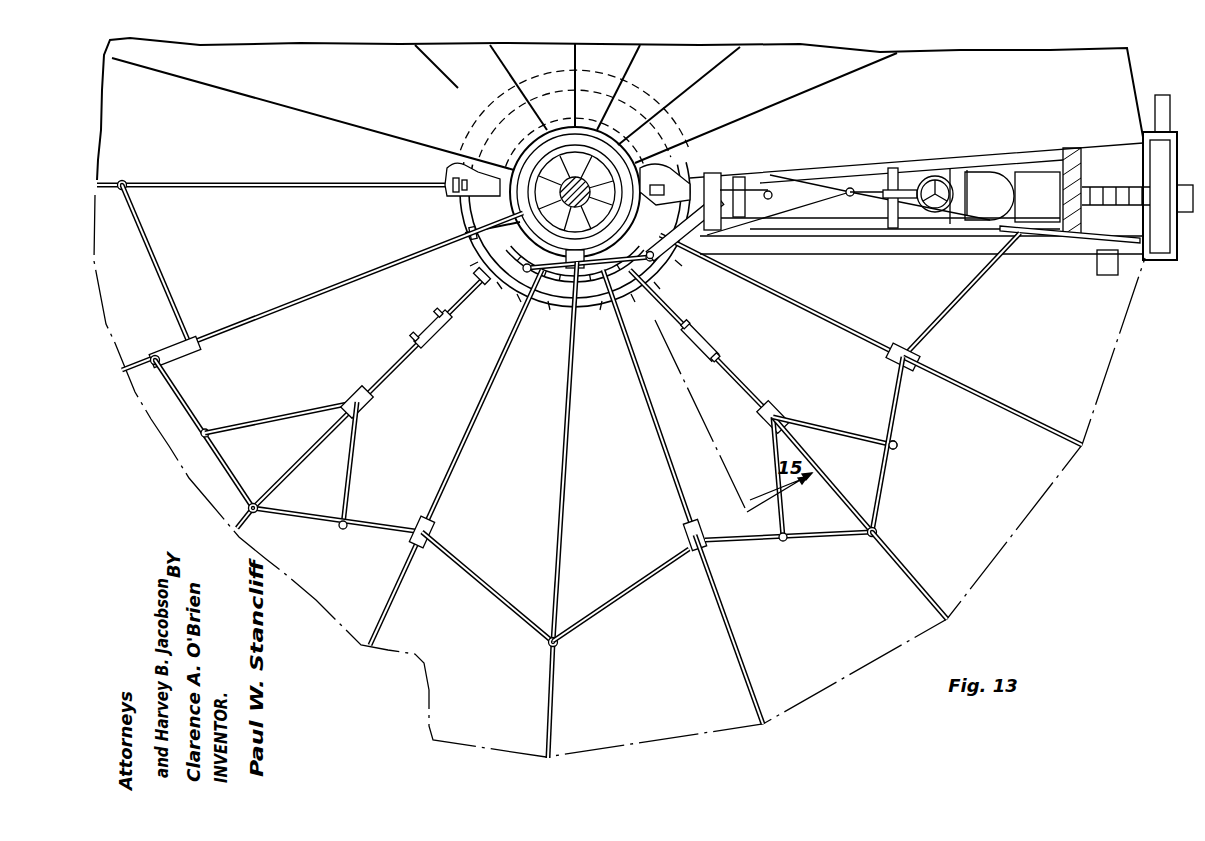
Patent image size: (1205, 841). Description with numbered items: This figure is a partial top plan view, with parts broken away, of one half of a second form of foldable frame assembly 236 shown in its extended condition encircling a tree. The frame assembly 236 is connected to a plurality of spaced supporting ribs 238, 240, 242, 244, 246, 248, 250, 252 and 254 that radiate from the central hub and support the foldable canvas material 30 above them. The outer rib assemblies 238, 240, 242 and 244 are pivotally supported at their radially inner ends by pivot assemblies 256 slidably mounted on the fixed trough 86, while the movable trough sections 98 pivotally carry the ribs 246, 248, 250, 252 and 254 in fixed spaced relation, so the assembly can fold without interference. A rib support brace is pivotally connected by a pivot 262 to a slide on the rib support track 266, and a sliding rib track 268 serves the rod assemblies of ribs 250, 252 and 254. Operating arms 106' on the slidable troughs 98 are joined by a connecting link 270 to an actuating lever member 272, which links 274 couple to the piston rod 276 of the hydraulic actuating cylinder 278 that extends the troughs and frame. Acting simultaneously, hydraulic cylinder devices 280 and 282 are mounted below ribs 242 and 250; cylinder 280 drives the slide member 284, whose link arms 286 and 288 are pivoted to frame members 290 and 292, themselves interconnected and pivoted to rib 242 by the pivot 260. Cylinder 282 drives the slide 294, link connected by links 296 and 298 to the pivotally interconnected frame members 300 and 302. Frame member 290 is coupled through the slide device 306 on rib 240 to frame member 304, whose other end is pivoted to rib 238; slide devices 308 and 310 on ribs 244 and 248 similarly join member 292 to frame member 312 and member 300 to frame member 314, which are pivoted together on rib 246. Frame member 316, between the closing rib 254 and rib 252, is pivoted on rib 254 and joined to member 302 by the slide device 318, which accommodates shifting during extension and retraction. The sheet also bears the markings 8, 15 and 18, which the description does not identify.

The hub shaft 8 is at (572, 180).
The section line / gear segment 15 is at (575, 242).
The arcuate guide track 18 is at (410, 163).
The foldable canvas material 30 is at (1130, 103).
The fixed trough 86 is at (632, 136).
The movable trough section 98 is at (517, 147).
The operating arm 106' is at (467, 247).
The foldable frame assembly 236 is at (903, 421).
The supporting rib 238 is at (1040, 245).
The supporting rib 240 is at (970, 380).
The supporting rib 242 is at (890, 550).
The supporting rib 244 is at (730, 615).
The supporting rib 246 is at (555, 672).
The supporting rib 248 is at (395, 590).
The supporting rib 250 is at (243, 525).
The supporting rib 252 is at (325, 300).
The closing rib member 254 is at (100, 190).
The pivot assembly 256 is at (665, 180).
The pivot 260 is at (878, 527).
The pivot 262 is at (465, 280).
The rib support track 266 is at (572, 312).
The sliding rib track 268 is at (500, 285).
The connecting link 270 is at (522, 300).
The actuating lever member 272 is at (702, 200).
The link 274 is at (792, 200).
The piston rod 276 is at (890, 182).
The hydraulic actuating cylinder 278 is at (924, 176).
The hydraulic cylinder device 280 is at (706, 330).
The hydraulic cylinder device 282 is at (420, 340).
The slide member 284 is at (775, 408).
The link arm 286 is at (840, 428).
The link arm 288 is at (777, 480).
The frame member 290 is at (888, 480).
The frame member 292 is at (815, 537).
The slide 294 is at (367, 410).
The link 296 is at (350, 475).
The link 298 is at (270, 418).
The frame member 300 is at (310, 525).
The frame member 302 is at (210, 458).
The frame member 304 is at (940, 305).
The slide device 306 is at (903, 345).
The slide device 308 is at (685, 535).
The slide device 310 is at (435, 530).
The frame member 312 is at (628, 585).
The frame member 314 is at (478, 578).
The frame member 316 is at (150, 265).
The slide device 318 is at (176, 360).